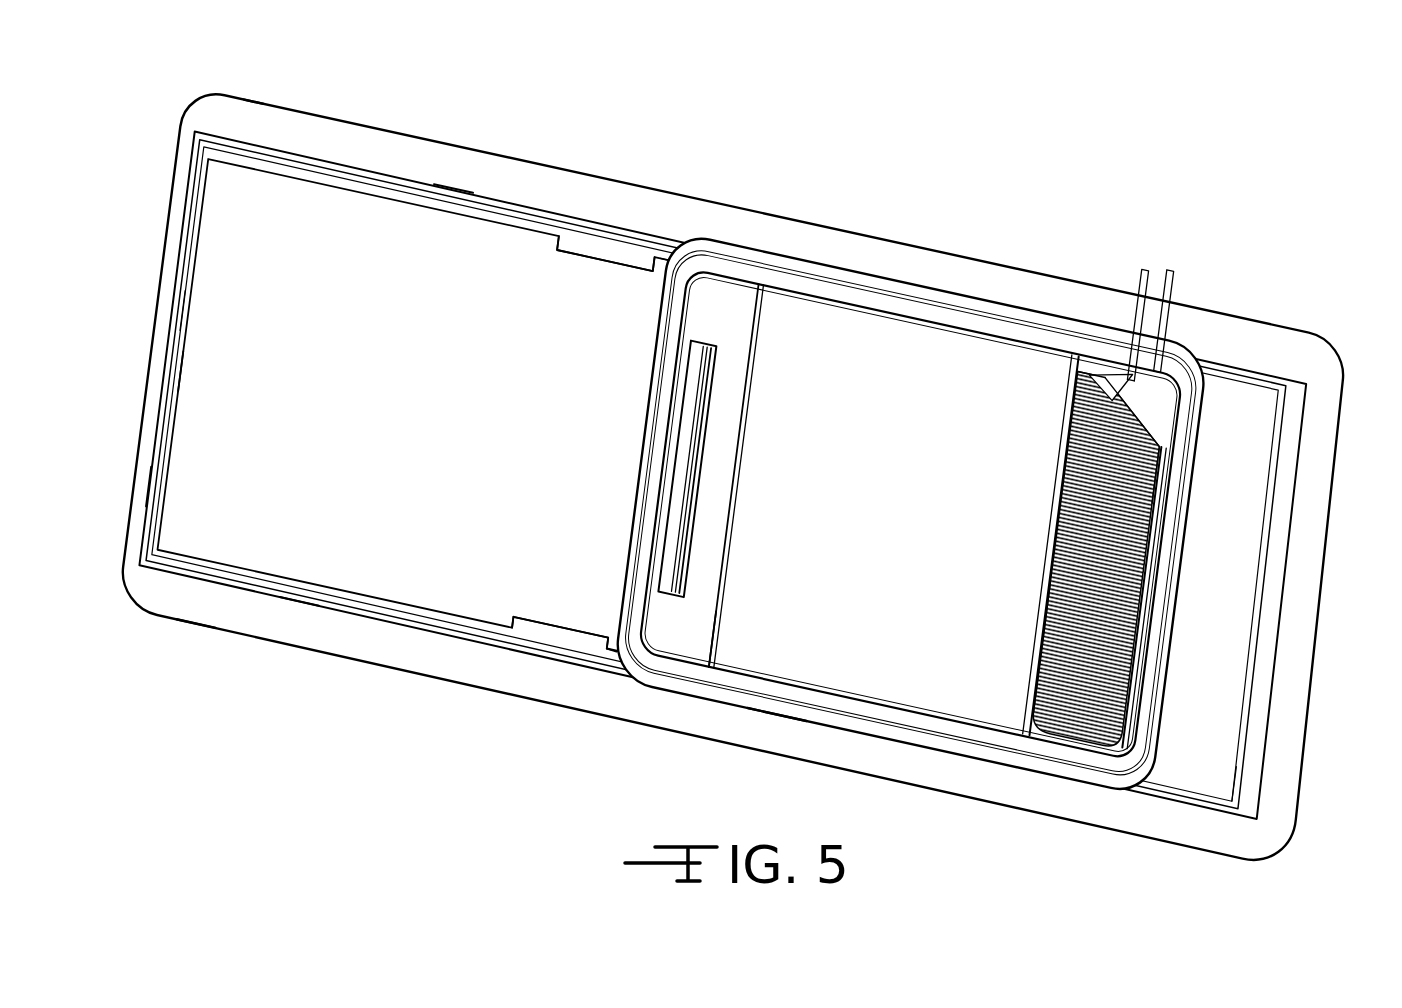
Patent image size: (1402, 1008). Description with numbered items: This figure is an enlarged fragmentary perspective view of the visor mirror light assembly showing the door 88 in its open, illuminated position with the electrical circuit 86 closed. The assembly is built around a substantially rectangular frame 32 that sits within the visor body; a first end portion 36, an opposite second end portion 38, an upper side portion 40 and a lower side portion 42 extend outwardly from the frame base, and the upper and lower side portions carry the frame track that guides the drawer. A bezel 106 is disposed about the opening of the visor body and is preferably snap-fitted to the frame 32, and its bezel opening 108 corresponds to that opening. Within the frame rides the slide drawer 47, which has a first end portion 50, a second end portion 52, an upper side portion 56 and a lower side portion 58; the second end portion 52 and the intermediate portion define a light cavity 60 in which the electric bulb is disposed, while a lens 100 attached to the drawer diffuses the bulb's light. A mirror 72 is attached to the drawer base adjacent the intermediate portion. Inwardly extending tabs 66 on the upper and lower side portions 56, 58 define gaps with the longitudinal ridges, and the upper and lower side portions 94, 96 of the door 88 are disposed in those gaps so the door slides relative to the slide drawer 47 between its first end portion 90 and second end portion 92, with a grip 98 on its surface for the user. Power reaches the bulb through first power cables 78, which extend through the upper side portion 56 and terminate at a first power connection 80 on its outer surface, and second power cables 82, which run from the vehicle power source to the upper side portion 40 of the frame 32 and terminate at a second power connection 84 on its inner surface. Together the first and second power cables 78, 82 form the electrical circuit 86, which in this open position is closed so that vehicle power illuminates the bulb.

The frame 32 is at (426, 126).
The first end portion 36 is at (180, 242).
The second end portion 38 is at (1244, 800).
The upper side portion 40 is at (252, 142).
The lower side portion 42 is at (176, 577).
The slide drawer 47 is at (224, 384).
The first end portion 50 is at (188, 323).
The second end portion 52 is at (1180, 423).
The upper side portion 56 is at (671, 262).
The lower side portion 58 is at (614, 627).
The light cavity 60 is at (1113, 372).
The tabs 66 is at (600, 250).
The mirror 72 is at (858, 541).
The first power cables 78 is at (1150, 440).
The first power connection 80 is at (1080, 404).
The second power cables 82 is at (1173, 273).
The second power connection 84 is at (1158, 395).
The electrical circuit 86 is at (1182, 290).
The door 88 is at (770, 348).
The first end portion 90 is at (186, 472).
The second end portion 92 is at (700, 620).
The upper side portion 94 is at (448, 236).
The lower side portion 96 is at (293, 562).
The grip 98 is at (702, 455).
The lens 100 is at (1072, 702).
The bezel 106 is at (920, 726).
The bezel opening 108 is at (783, 672).